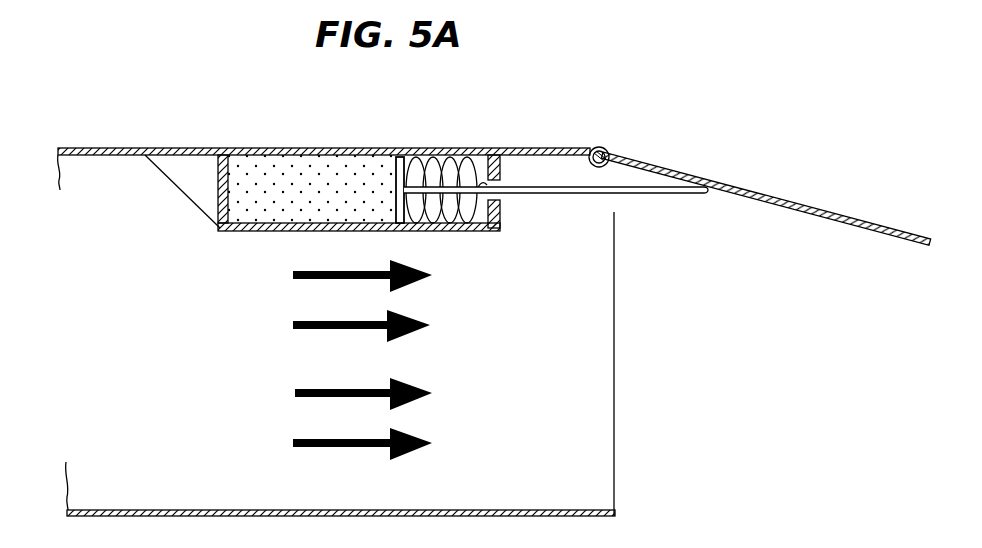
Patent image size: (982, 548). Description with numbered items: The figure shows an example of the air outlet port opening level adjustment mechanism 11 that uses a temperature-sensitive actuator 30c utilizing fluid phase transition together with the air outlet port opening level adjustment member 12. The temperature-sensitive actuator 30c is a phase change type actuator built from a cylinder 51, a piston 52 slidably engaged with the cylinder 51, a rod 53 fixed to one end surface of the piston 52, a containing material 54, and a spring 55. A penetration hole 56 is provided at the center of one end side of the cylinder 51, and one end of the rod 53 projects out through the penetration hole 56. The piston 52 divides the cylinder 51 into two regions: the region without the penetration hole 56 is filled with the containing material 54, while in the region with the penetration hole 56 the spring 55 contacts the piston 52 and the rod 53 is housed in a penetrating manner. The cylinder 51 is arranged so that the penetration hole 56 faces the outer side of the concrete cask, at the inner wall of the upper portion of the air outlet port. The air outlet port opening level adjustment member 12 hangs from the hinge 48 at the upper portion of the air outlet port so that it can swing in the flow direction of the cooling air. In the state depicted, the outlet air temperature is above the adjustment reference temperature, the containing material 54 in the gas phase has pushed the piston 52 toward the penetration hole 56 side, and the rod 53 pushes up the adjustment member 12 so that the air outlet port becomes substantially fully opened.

The air outlet port opening level adjustment mechanism 11 is at (100, 271).
The air outlet port opening level adjustment member 12 is at (792, 205).
The hinge 48 is at (610, 152).
The cylinder 51 is at (220, 198).
The piston 52 is at (403, 224).
The rod 53 is at (642, 194).
The containing material 54 is at (242, 218).
The spring 55 is at (480, 222).
The penetration hole 56 is at (502, 197).
The temperature-sensitive actuator 30c is at (258, 278).